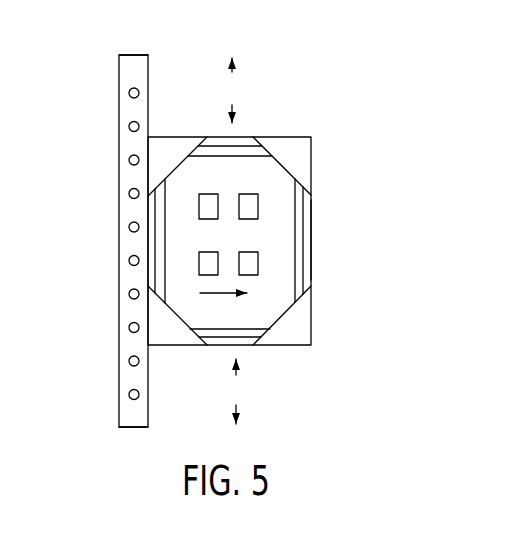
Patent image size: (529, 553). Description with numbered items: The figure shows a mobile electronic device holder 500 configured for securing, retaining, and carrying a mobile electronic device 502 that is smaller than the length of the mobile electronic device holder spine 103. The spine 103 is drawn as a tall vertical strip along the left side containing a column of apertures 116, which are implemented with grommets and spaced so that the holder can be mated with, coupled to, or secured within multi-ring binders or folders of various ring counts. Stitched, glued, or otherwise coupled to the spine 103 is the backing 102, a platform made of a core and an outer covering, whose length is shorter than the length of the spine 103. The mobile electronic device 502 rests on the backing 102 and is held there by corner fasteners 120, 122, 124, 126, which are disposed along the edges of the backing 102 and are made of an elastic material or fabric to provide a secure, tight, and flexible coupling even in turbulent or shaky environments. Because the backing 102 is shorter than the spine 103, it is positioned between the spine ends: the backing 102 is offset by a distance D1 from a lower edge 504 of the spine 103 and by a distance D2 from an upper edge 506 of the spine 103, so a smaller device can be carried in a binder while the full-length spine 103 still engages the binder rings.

The backing 102 is at (320, 289).
The mobile electronic device holder spine 103 is at (142, 45).
The apertures 116 is at (128, 260).
The corner fastener 120 is at (162, 325).
The corner fastener 122 is at (163, 145).
The corner fastener 124 is at (292, 158).
The corner fastener 126 is at (288, 330).
The mobile electronic device holder 500 is at (275, 136).
The mobile electronic device 502 is at (275, 250).
The lower edge 504 is at (105, 432).
The upper edge 506 is at (108, 53).
The distance D1 is at (234, 391).
The distance D2 is at (232, 90).